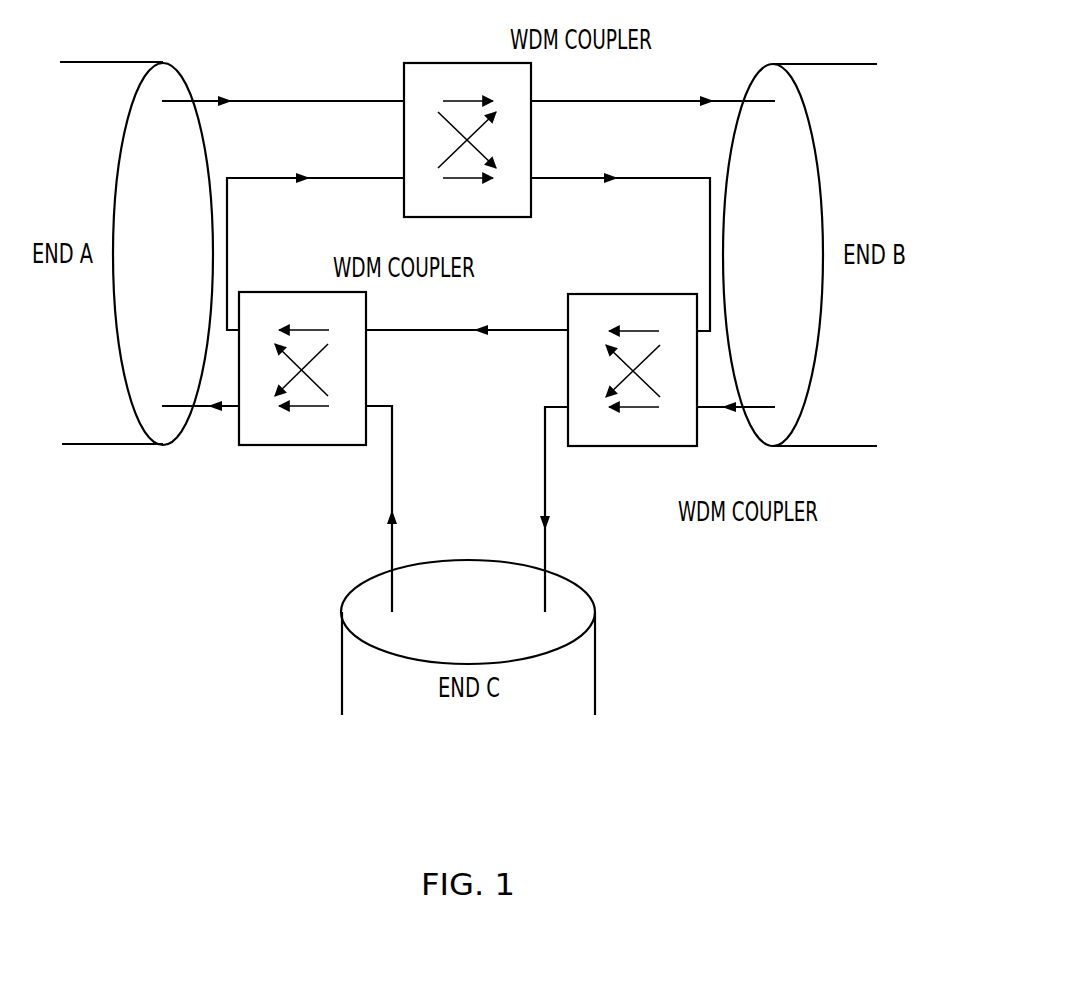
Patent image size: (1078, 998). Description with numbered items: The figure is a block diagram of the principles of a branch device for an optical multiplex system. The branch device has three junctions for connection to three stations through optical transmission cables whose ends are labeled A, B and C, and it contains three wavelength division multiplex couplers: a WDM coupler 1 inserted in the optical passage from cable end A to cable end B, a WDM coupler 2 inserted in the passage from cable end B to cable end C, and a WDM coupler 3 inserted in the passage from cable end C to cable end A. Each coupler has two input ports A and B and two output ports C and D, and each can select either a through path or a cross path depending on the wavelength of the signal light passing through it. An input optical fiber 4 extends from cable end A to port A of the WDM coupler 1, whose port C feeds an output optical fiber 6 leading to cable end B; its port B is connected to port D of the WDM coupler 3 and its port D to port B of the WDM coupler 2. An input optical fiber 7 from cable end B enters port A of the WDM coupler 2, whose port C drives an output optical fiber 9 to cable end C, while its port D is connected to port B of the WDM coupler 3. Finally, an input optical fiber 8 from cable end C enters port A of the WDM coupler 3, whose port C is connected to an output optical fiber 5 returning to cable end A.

The WDM coupler 1 is at (447, 63).
The WDM coupler 2 is at (633, 446).
The WDM coupler 3 is at (279, 292).
The input optical fiber 4 is at (286, 101).
The output optical fiber 5 is at (228, 412).
The output optical fiber 6 is at (641, 101).
The input optical fiber 7 is at (737, 412).
The input optical fiber 8 is at (389, 492).
The output optical fiber 9 is at (545, 490).